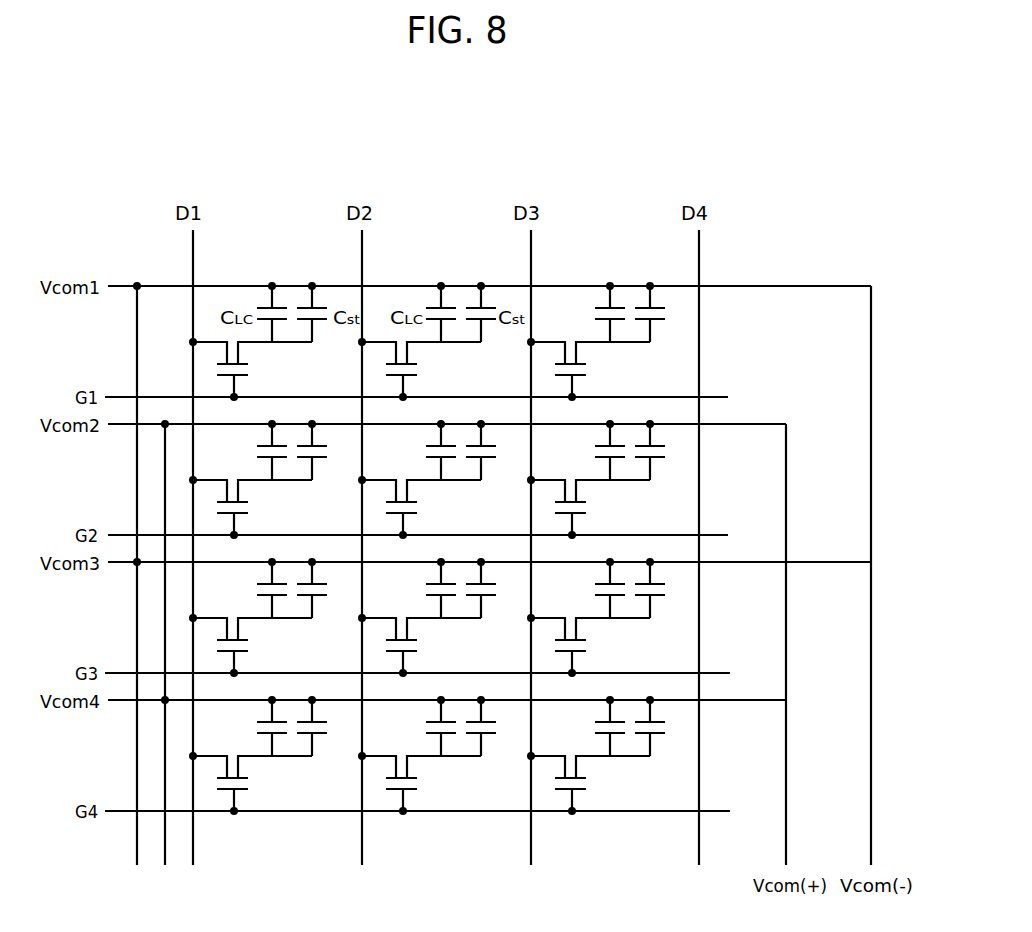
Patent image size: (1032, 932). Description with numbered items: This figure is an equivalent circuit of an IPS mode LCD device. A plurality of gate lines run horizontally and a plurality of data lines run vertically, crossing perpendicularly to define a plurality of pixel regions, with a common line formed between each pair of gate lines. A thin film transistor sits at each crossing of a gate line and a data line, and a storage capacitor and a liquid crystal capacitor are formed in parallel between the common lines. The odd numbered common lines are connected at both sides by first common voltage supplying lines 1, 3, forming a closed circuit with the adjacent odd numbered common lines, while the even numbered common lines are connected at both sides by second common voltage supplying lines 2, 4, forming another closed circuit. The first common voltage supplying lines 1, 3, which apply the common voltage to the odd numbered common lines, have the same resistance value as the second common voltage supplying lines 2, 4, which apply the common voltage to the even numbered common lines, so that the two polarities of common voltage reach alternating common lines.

The first common voltage supplying line 1 is at (871, 673).
The second common voltage supplying line 2 is at (786, 645).
The first common voltage supplying line 3 is at (137, 610).
The second common voltage supplying line 4 is at (165, 482).